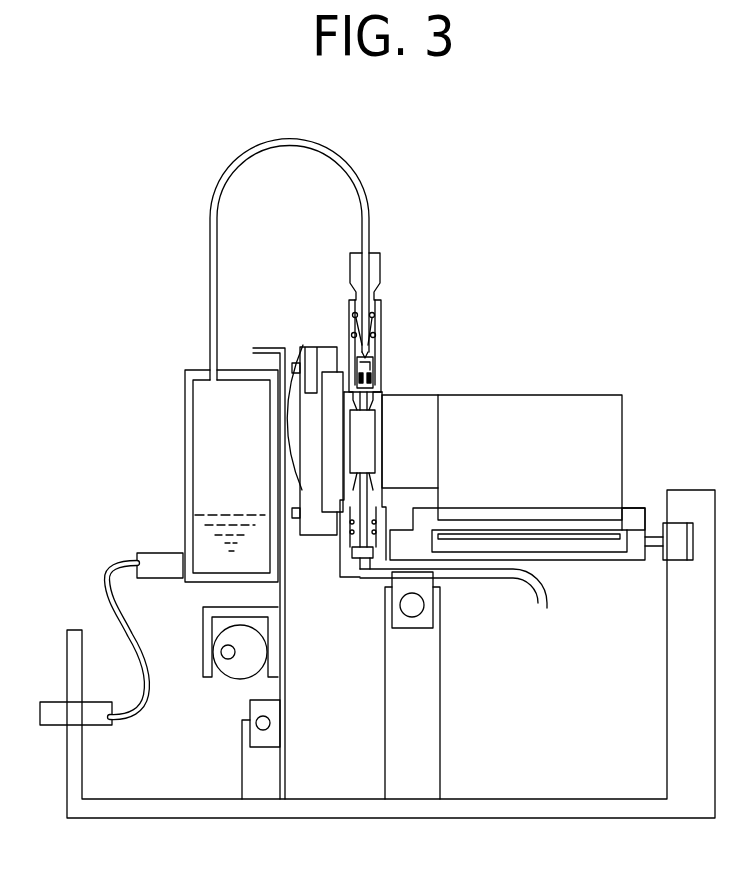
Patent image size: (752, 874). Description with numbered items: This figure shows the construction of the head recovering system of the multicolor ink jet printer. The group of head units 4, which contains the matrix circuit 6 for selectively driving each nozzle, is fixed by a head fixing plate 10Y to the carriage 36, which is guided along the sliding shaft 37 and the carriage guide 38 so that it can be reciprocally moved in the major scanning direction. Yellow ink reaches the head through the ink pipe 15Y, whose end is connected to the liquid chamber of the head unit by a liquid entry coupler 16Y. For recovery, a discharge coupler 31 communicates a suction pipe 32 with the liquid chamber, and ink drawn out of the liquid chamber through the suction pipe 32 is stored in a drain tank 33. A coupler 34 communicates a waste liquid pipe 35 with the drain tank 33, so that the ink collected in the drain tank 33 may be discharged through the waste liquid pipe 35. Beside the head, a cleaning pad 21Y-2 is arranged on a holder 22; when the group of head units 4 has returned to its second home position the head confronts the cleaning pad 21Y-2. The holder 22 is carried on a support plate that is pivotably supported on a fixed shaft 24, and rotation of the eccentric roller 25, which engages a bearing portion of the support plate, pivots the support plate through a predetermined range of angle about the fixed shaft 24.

The group of head units 4 is at (535, 396).
The matrix circuit 6 is at (585, 538).
The head fixing plate 10Y is at (672, 481).
The ink pipe 15Y is at (480, 613).
The liquid entry coupler 16Y is at (455, 484).
The cleaning pad 21Y-2 is at (333, 492).
The holder 22 is at (300, 363).
The fixed shaft 24 is at (270, 723).
The eccentric roller 25 is at (228, 670).
The discharge coupler 31 is at (383, 297).
The suction pipe 32 is at (363, 186).
The drain tank 33 is at (186, 487).
The coupler 34 is at (165, 562).
The waste liquid pipe 35 is at (107, 588).
The carriage 36 is at (638, 548).
The sliding shaft 37 is at (418, 605).
The carriage guide 38 is at (678, 687).